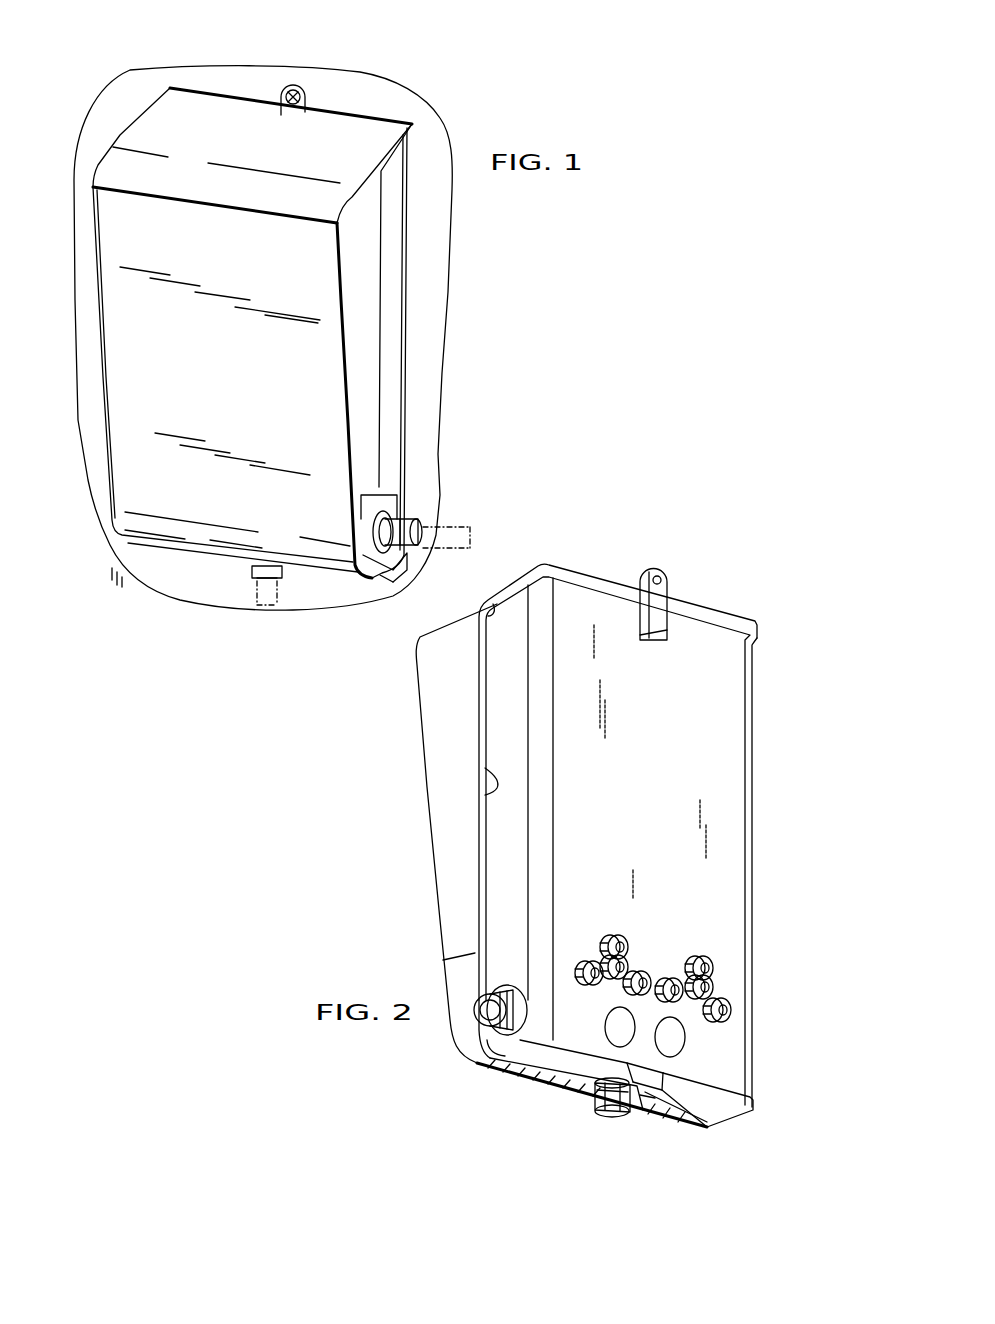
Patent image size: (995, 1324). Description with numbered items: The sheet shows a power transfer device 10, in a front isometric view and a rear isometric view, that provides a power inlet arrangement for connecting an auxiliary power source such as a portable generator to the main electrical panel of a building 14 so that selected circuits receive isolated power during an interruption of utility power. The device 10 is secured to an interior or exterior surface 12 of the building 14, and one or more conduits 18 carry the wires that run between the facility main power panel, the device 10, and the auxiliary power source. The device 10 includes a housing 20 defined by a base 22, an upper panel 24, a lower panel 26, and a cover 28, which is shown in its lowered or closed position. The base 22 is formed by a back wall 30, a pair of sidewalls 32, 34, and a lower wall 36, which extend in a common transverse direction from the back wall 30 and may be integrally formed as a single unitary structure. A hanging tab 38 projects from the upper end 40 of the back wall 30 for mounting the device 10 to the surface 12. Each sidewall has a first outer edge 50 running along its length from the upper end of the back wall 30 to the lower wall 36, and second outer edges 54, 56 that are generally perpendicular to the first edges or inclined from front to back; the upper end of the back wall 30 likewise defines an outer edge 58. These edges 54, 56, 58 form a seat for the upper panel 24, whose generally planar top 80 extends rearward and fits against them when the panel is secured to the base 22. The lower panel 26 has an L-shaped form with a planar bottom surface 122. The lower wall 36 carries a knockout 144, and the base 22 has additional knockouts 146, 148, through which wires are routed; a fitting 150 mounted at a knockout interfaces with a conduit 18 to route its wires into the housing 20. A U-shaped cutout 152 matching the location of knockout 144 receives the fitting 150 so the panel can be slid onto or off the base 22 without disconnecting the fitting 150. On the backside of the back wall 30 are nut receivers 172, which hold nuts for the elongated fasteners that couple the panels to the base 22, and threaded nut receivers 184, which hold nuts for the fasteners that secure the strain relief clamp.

In FIG. 1, the power transfer device 10 is at (495, 50).
In FIG. 2, the power transfer device 10 is at (742, 497).
In FIG. 1, the surface 12 is at (413, 330).
In FIG. 1, the building 14 is at (113, 122).
In FIG. 2, the building 14 is at (456, 833).
In FIG. 1, the conduit 18 is at (257, 585).
In FIG. 1, the housing 20 is at (357, 105).
In FIG. 2, the housing 20 is at (717, 600).
In FIG. 1, the base 22 is at (412, 218).
In FIG. 2, the base 22 is at (760, 722).
In FIG. 1, the upper panel 24 is at (357, 250).
In FIG. 2, the upper panel 24 is at (447, 717).
In FIG. 1, the lower panel 26 is at (393, 497).
In FIG. 2, the lower panel 26 is at (463, 1037).
In FIG. 1, the cover 28 is at (132, 337).
In FIG. 2, the back wall 30 is at (635, 785).
In FIG. 1, the sidewall 32 is at (397, 370).
In FIG. 2, the sidewall 32 is at (500, 812).
In FIG. 2, the sidewall 34 is at (752, 780).
In FIG. 2, the lower wall 36 is at (647, 1107).
In FIG. 1, the hanging tab 38 is at (293, 86).
In FIG. 2, the hanging tab 38 is at (657, 566).
In FIG. 2, the upper end 40 is at (720, 662).
In FIG. 1, the first outer edge 50 is at (380, 418).
In FIG. 2, the first outer edge 50 is at (487, 783).
In FIG. 2, the second outer edge 54 is at (483, 607).
In FIG. 2, the second outer edge 56 is at (753, 647).
In FIG. 2, the outer edge 58 is at (600, 583).
In FIG. 1, the planar top 80 is at (238, 137).
In FIG. 2, the bottom surface 122 is at (723, 1110).
In FIG. 2, the knockout 144 is at (637, 1113).
In FIG. 2, the knockout 146 is at (610, 1030).
In FIG. 2, the knockout 148 is at (677, 1037).
In FIG. 1, the fitting 150 is at (393, 583).
In FIG. 2, the fitting 150 is at (487, 1037).
In FIG. 2, the U-shaped cutout 152 is at (667, 1110).
In FIG. 2, the nut receivers 172 is at (600, 958).
In FIG. 2, the threaded nut receivers 184 is at (660, 980).